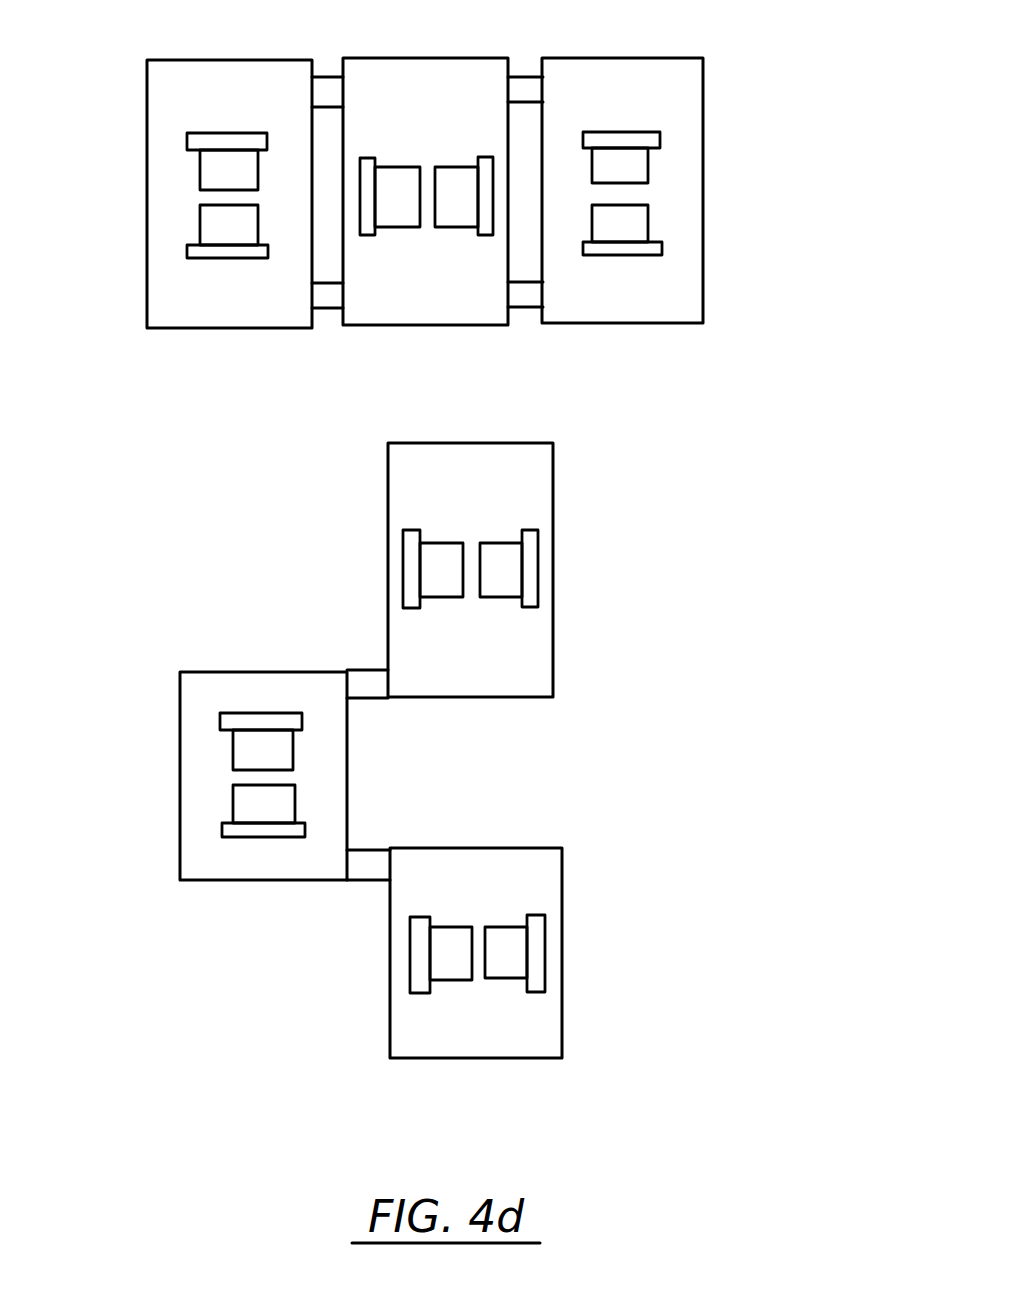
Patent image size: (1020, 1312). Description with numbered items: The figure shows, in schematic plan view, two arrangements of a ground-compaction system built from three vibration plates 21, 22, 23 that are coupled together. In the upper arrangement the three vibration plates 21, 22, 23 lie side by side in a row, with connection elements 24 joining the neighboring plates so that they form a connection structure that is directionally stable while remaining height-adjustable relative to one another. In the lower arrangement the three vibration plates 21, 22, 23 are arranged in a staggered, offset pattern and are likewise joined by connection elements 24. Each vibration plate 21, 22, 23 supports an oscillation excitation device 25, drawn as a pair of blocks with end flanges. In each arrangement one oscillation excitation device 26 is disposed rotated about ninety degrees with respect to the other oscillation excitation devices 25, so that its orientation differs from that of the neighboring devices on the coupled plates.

The vibration plate 21 is at (225, 68).
The vibration plate 22 is at (452, 65).
The vibration plate 23 is at (673, 65).
The connection element 24 is at (322, 72).
The oscillation excitation device 25 is at (212, 162).
The oscillation excitation device 26 is at (393, 170).